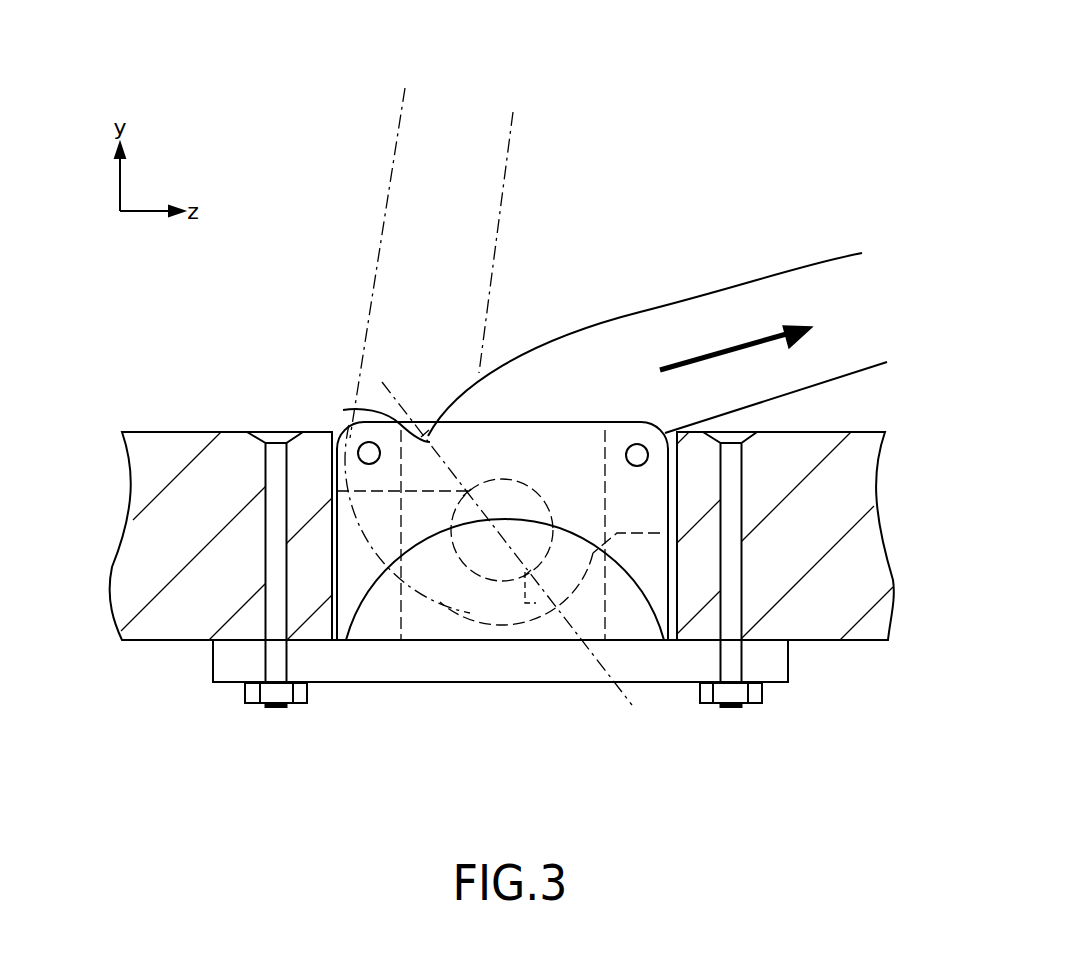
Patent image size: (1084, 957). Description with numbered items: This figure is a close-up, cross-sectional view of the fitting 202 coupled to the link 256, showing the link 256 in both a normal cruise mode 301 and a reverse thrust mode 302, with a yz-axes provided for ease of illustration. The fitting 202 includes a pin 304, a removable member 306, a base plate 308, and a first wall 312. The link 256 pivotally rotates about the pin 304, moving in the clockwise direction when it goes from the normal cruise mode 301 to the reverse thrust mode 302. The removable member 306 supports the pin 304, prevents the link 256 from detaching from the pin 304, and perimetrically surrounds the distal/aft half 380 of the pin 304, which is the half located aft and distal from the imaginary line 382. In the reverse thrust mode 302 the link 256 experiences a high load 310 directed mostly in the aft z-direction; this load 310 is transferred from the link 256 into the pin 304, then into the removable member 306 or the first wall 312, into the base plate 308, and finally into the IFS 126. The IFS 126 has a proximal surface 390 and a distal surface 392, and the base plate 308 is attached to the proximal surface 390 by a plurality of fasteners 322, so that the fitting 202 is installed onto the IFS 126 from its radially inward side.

The IFS 126 is at (141, 643).
The fitting 202 is at (489, 735).
The link 256 is at (398, 203).
The normal cruise mode 301 is at (452, 105).
The reverse thrust mode 302 is at (852, 245).
The pin 304 is at (478, 577).
The removable member 306 is at (558, 422).
The base plate 308 is at (342, 684).
The load 310 is at (732, 350).
The first wall 312 is at (343, 410).
The fasteners 322 is at (275, 718).
The distal/aft half 380 is at (543, 493).
The imaginary line 382 is at (632, 702).
The proximal surface 390 is at (820, 645).
The distal surface 392 is at (860, 432).